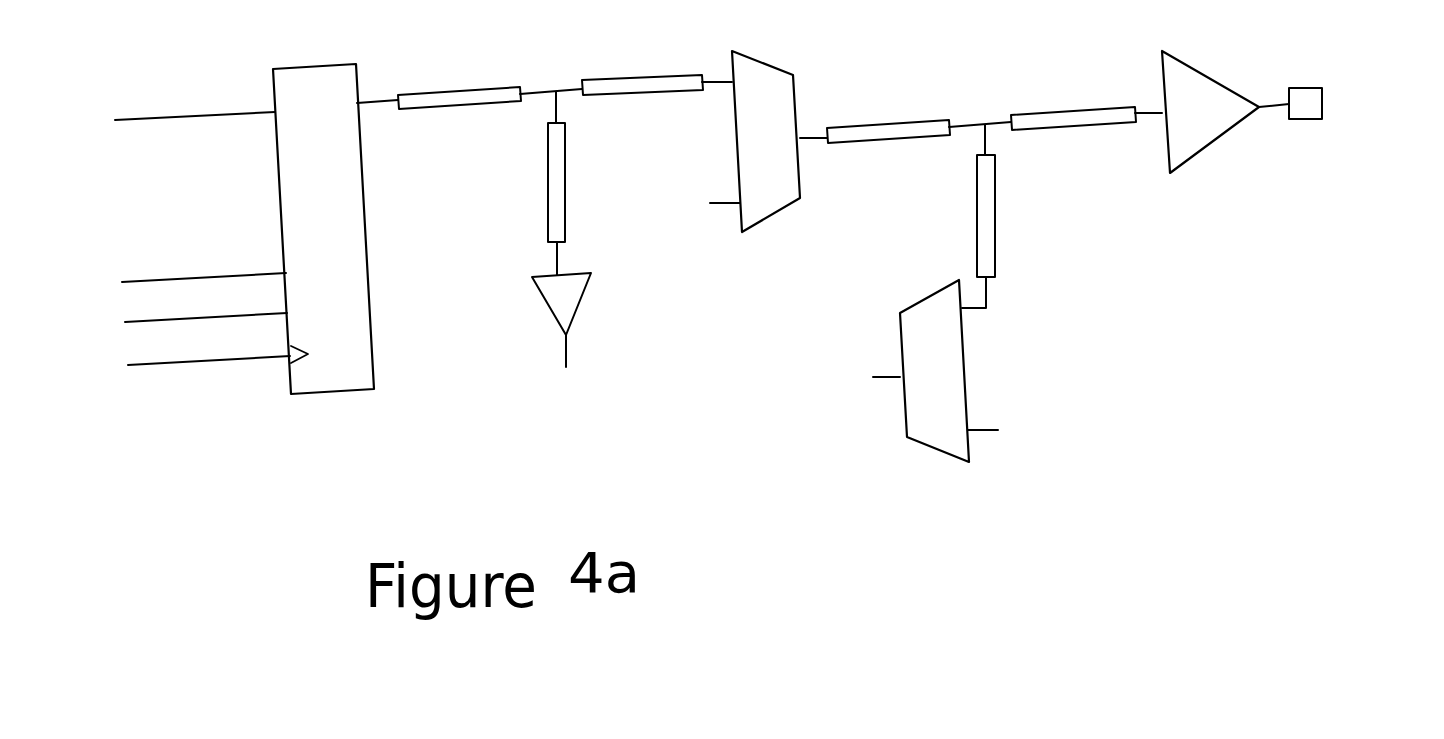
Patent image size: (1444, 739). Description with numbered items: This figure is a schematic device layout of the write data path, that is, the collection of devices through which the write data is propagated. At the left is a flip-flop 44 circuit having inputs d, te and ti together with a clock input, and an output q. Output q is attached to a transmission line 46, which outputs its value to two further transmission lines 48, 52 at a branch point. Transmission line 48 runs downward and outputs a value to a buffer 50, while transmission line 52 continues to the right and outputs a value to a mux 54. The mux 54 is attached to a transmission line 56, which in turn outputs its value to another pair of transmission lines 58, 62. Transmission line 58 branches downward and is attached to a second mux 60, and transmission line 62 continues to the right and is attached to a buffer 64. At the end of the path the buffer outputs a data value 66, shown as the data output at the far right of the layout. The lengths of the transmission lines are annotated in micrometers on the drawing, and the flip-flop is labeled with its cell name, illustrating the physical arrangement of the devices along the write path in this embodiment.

The flip-flop 44 is at (257, 250).
The transmission line 46 is at (471, 107).
The transmission line 48 is at (549, 187).
The buffer 50 is at (547, 301).
The transmission line 52 is at (668, 95).
The mux 54 is at (781, 211).
The transmission line 56 is at (918, 140).
The transmission line 58 is at (976, 188).
The mux 60 is at (964, 338).
The transmission line 62 is at (1108, 124).
The buffer 64 is at (1233, 124).
The data value 66 is at (1302, 119).